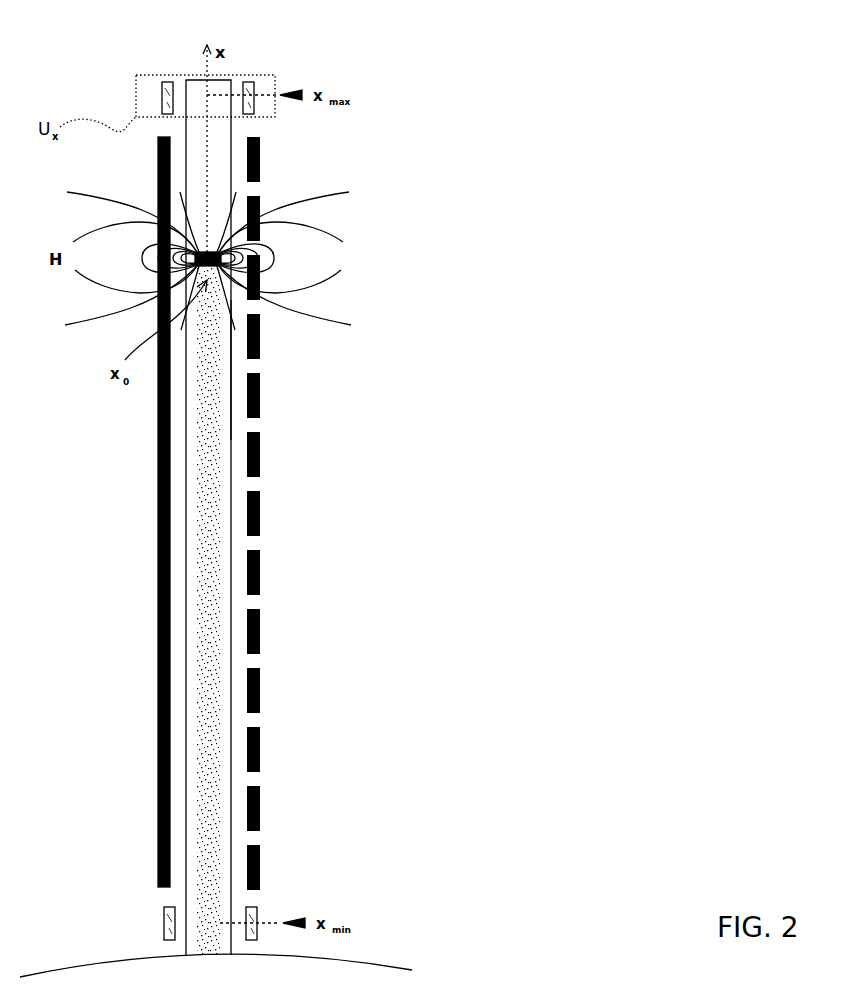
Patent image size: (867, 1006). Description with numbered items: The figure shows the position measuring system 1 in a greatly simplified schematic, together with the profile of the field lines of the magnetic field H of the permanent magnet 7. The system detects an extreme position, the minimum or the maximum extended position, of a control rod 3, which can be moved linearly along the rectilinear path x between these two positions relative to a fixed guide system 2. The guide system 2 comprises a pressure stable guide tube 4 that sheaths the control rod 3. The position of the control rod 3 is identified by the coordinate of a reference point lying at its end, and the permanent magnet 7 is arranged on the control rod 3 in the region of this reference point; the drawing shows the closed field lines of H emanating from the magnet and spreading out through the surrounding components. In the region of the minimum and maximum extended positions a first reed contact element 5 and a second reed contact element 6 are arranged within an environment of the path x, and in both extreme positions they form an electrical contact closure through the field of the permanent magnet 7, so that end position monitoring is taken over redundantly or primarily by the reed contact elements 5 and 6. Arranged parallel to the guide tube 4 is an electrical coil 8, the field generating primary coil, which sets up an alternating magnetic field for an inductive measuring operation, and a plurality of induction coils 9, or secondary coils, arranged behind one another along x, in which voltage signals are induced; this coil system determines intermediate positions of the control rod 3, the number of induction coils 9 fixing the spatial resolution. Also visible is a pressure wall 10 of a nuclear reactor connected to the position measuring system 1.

The position measuring system 1 is at (517, 443).
The guide system 2 is at (238, 486).
The control rod 3 is at (217, 425).
The guide tube 4 is at (231, 365).
The first reed contact element 5 is at (258, 87).
The second reed contact element 6 is at (156, 92).
The permanent magnet 7 is at (250, 252).
The electrical coil 8 is at (151, 562).
The induction coils 9 is at (274, 152).
The pressure wall 10 is at (397, 961).